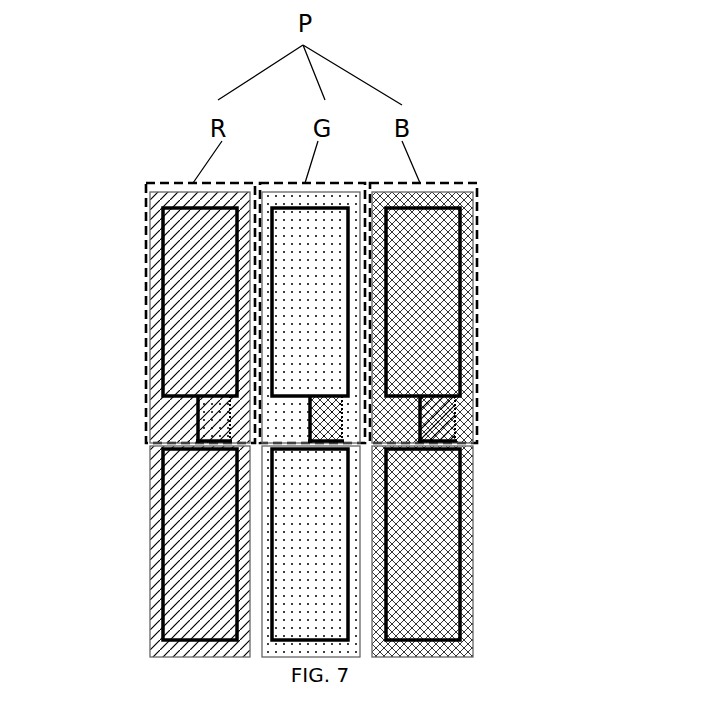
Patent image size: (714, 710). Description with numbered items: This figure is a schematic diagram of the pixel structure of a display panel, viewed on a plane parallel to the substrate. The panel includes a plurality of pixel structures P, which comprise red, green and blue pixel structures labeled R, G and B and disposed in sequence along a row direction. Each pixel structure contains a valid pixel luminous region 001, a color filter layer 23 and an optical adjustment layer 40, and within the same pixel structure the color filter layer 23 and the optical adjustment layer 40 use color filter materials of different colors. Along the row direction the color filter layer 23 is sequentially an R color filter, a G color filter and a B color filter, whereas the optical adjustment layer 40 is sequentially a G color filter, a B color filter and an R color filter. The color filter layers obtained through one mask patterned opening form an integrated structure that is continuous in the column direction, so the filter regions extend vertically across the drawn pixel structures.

The valid pixel luminous region 001 is at (458, 228).
The color filter layer 23 is at (425, 313).
The optical adjustment layer 40 is at (450, 410).